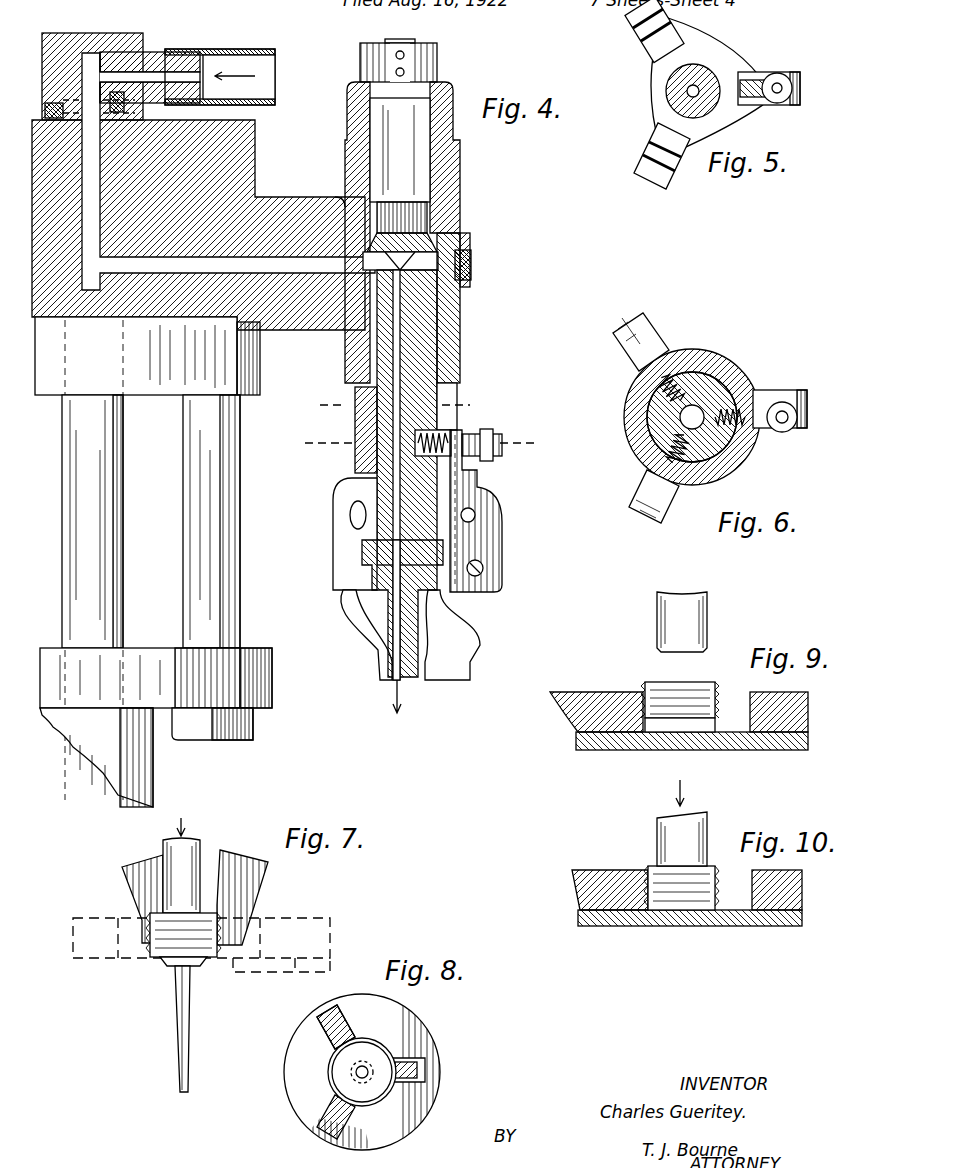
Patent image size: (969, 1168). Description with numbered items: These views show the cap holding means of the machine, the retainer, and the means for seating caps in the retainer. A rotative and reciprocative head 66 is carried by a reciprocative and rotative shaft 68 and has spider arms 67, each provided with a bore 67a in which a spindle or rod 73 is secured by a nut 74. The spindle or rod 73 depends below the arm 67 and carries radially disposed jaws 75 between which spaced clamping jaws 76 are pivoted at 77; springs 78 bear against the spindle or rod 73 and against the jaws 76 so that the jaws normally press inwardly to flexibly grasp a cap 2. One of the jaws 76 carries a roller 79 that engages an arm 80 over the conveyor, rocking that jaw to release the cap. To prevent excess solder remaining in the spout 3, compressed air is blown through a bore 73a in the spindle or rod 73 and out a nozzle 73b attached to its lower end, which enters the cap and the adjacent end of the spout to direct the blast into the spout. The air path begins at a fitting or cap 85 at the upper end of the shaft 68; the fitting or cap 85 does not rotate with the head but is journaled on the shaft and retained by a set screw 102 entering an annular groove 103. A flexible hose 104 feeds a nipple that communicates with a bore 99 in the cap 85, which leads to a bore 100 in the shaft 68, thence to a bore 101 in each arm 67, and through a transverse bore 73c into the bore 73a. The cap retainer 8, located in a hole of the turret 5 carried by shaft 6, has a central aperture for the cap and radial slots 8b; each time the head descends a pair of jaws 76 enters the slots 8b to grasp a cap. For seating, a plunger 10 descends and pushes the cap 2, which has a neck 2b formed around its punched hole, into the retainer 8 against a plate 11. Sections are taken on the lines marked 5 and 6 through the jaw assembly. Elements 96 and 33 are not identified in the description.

In FIG. 4, the set screw 102 is at (50, 98).
In FIG. 4, the fitting or cap 85 is at (104, 58).
In FIG. 4, the bore 99 is at (147, 58).
In FIG. 4, the air pipe 96 is at (163, 62).
In FIG. 4, the flexible hose 104 is at (258, 89).
In FIG. 4, the annular groove 103 is at (138, 108).
In FIG. 4, the bore 100 is at (300, 269).
In FIG. 4, the bore 101 is at (325, 264).
In FIG. 4, the nut 74 is at (438, 57).
In FIG. 4, the bore 67a is at (455, 183).
In FIG. 4, the transverse bore 73c is at (395, 248).
In FIG. 4, the spider arm 67 is at (292, 326).
In FIG. 4, the spindle or rod 73 is at (460, 302).
In FIG. 5, the spindle or rod 73 is at (708, 70).
In FIG. 6, the spindle or rod 73 is at (703, 388).
In FIG. 4, the bore 73a is at (405, 368).
In FIG. 4, the nozzle 73b is at (416, 680).
In FIG. 7, the nozzle 73b is at (190, 845).
In FIG. 4, the rotative and reciprocative head 66 is at (160, 380).
In FIG. 4, the reciprocative and rotative shaft 68 is at (97, 545).
In FIG. 4, the spring 78 is at (446, 440).
In FIG. 6, the spring 78 is at (733, 400).
In FIG. 4, the roller 79 is at (494, 433).
In FIG. 5, the roller 79 is at (787, 105).
In FIG. 6, the roller 79 is at (787, 434).
In FIG. 4, the radially disposed jaw 75 is at (342, 498).
In FIG. 5, the radially disposed jaw 75 is at (750, 124).
In FIG. 4, the clamping jaw 76 is at (494, 526).
In FIG. 5, the clamping jaw 76 is at (753, 83).
In FIG. 6, the clamping jaw 76 is at (656, 340).
In FIG. 7, the clamping jaw 76 is at (234, 853).
In FIG. 8, the clamping jaw 76 is at (337, 1020).
In FIG. 4, the pivot 77 is at (474, 511).
In FIG. 4, the turret 5 is at (404, 405).
In FIG. 4, the shaft 6 is at (425, 444).
In FIG. 9, the cap 2 is at (646, 680).
In FIG. 10, the cap 2 is at (656, 866).
In FIG. 7, the cap 2 is at (170, 953).
In FIG. 7, the neck 2b is at (198, 962).
In FIG. 7, the spout 3 is at (184, 1018).
In FIG. 9, the plate 11 is at (748, 750).
In FIG. 10, the plate 11 is at (770, 926).
In FIG. 7, the plate 11 is at (201, 961).
In FIG. 9, the plunger 10 is at (686, 622).
In FIG. 10, the plunger 10 is at (697, 843).
In FIG. 9, the cap retainer 8 is at (618, 718).
In FIG. 10, the cap retainer 8 is at (600, 890).
In FIG. 8, the cap retainer 8 is at (428, 1082).
In FIG. 8, the radial slot 8b is at (313, 1018).
In FIG. 8, the arm 80 is at (360, 1038).
In FIG. 8, the center pin 33 is at (374, 1080).